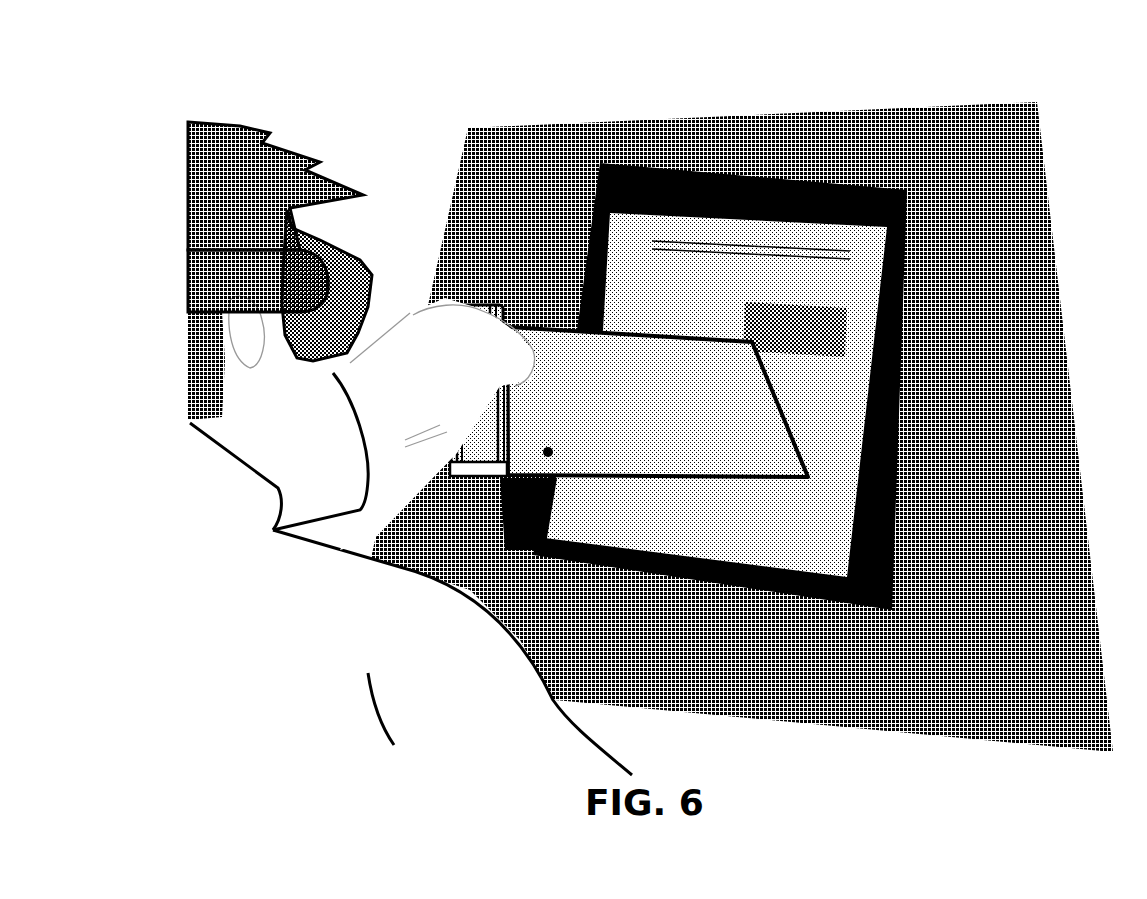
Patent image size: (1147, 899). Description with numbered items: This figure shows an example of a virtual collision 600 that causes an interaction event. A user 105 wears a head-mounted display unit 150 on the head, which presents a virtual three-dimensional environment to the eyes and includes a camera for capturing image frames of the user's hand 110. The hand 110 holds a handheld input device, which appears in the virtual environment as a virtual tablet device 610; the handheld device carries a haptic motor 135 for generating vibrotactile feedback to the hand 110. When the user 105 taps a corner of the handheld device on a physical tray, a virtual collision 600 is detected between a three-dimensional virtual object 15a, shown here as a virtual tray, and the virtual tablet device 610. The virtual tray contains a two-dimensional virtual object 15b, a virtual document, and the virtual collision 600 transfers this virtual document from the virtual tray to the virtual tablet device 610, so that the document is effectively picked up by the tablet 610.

The virtual collision 600 is at (744, 80).
The head-mounted display unit 150 is at (362, 257).
The user's hand 110 is at (404, 424).
The user 105 is at (414, 510).
The haptic motor 135 is at (549, 457).
The 3D virtual object 15a is at (613, 180).
The 2D virtual object 15b is at (897, 255).
The virtual tablet device 610 is at (568, 320).